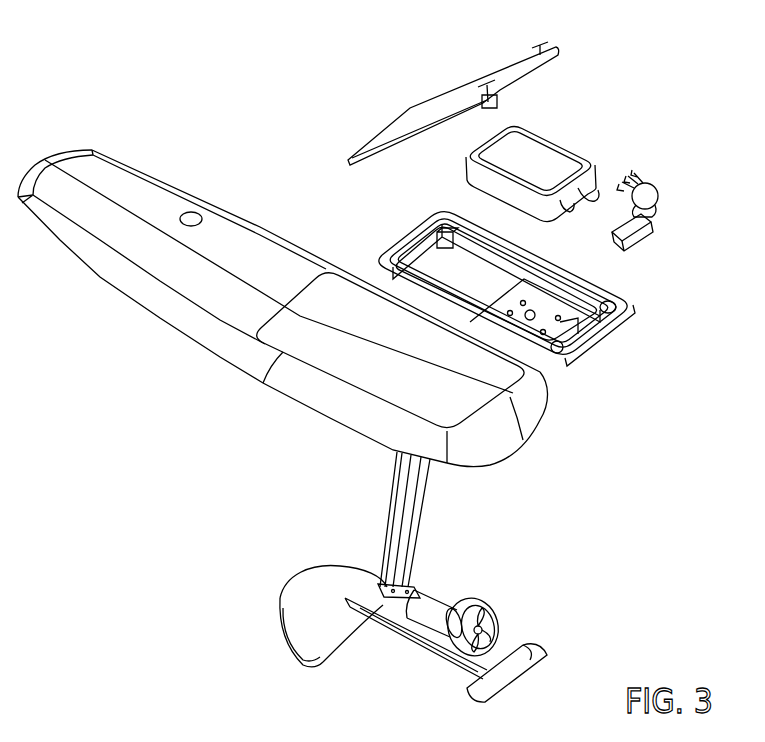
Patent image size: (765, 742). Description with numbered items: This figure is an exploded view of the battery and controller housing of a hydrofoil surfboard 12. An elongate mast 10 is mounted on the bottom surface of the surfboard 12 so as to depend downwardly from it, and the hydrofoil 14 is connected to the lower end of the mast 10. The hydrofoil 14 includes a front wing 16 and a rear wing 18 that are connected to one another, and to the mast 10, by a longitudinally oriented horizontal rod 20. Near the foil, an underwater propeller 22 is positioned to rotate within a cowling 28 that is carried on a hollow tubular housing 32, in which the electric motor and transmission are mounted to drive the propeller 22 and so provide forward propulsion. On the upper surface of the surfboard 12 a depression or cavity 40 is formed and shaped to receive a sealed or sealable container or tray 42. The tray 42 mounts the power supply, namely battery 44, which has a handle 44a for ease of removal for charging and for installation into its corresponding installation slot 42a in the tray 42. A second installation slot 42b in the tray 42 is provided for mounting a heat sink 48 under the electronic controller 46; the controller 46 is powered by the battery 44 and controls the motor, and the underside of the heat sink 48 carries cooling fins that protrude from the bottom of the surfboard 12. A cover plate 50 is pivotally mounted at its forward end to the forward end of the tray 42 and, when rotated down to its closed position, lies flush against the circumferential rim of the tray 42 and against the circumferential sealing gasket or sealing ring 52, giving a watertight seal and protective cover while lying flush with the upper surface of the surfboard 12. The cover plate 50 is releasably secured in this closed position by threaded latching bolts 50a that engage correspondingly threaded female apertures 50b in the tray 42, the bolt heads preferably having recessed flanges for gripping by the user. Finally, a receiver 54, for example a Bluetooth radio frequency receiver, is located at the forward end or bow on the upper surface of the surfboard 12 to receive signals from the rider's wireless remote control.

The mast 10 is at (422, 530).
The surfboard 12 is at (110, 288).
The hydrofoil 14 is at (412, 630).
The front wing 16 is at (290, 600).
The rear wing 18 is at (536, 668).
The horizontal rod 20 is at (422, 650).
The propeller 22 is at (493, 637).
The cowling 28 is at (492, 605).
The housing 32 is at (438, 595).
The cavity 40 is at (353, 357).
The tray 42 is at (543, 290).
The installation slot 42a is at (490, 283).
The second installation slot 42b is at (582, 342).
The battery 44 is at (568, 140).
The handle 44a is at (605, 168).
The electronic controller 46 is at (660, 200).
The heat sink 48 is at (652, 243).
The cover plate 50 is at (453, 94).
The latching bolts 50a is at (537, 42).
The threaded female apertures 50b is at (612, 300).
The sealing ring 52 is at (417, 226).
The receiver 54 is at (197, 215).